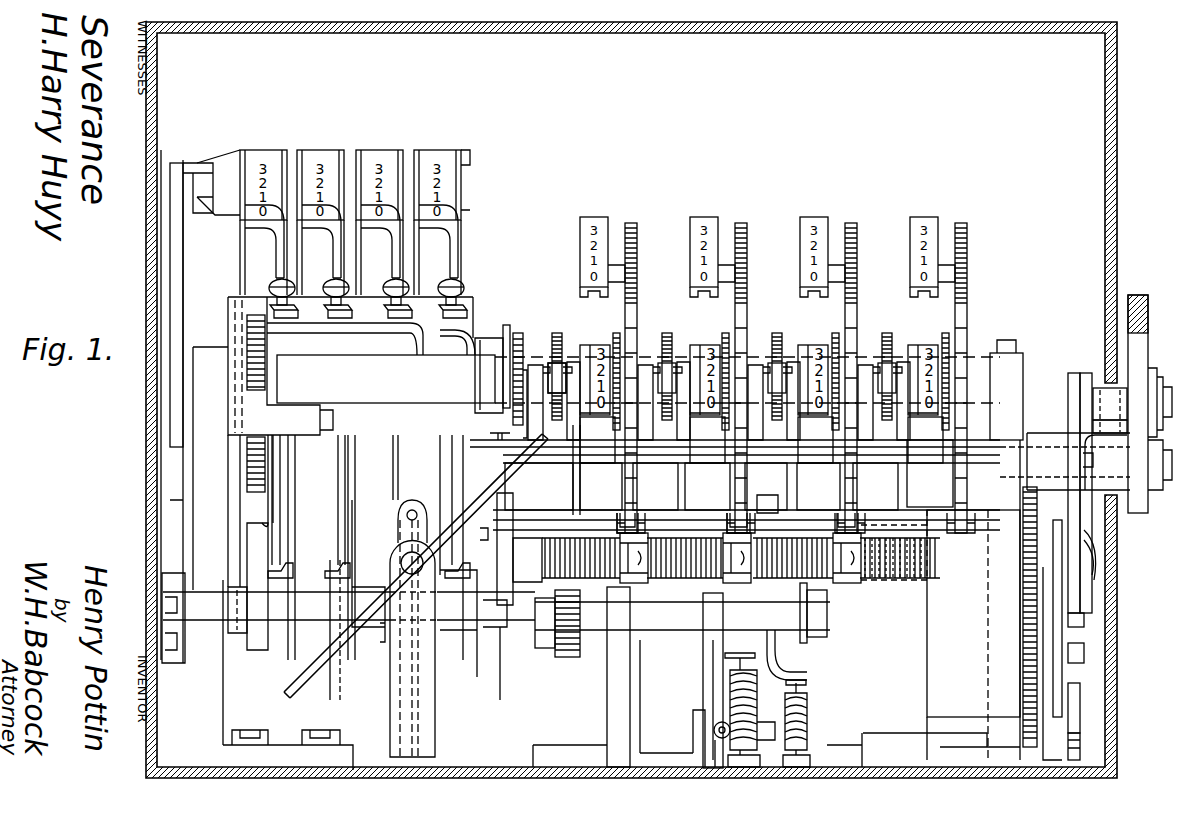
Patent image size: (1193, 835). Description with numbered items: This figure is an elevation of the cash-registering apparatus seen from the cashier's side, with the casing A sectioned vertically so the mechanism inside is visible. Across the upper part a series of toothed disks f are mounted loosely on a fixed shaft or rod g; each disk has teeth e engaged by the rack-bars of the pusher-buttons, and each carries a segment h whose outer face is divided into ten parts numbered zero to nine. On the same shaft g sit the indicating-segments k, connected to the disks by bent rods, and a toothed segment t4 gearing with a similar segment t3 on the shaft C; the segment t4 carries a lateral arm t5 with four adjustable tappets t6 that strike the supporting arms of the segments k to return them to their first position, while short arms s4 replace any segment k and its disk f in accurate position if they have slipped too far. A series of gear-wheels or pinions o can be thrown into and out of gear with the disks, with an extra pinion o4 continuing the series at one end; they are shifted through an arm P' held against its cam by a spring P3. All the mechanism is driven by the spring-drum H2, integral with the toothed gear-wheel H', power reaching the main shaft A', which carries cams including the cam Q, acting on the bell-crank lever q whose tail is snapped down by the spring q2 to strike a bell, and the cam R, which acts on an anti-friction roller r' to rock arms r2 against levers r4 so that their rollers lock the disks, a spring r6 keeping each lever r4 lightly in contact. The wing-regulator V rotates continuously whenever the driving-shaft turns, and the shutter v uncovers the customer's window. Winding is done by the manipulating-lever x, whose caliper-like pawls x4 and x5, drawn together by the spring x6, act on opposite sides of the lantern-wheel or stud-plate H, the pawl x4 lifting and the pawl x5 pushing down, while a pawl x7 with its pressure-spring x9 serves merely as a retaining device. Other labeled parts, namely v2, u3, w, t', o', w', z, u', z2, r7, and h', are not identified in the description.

The casing A is at (648, 400).
The shutter v is at (220, 155).
The side plate v2 is at (183, 468).
The indicating-segments k is at (263, 170).
The tappets t6 is at (293, 290).
The lateral arm t5 is at (395, 275).
The toothed segment t4 is at (250, 338).
The toothed segment t3 is at (255, 465).
The fixed shaft or rod g is at (330, 378).
The sleeve u3 is at (492, 338).
The pinion o4 is at (518, 333).
The segments h is at (767, 236).
The teeth e is at (637, 228).
The numeral wheel w is at (788, 383).
The pinion t' is at (723, 361).
The sleeve o' is at (708, 355).
The gear-wheels o is at (688, 354).
The rack w' is at (780, 366).
The stop z is at (580, 350).
The toothed disks f is at (631, 345).
The sleeve u' is at (668, 329).
The guide block z2 is at (575, 485).
The levers r4 is at (722, 530).
The bracket r7 is at (748, 515).
The spring r6 is at (548, 573).
The anti-friction-roller r' is at (747, 608).
The arms r2 is at (618, 570).
The cam R is at (565, 657).
The main shaft A' is at (682, 632).
The cam Q is at (712, 622).
The bell-crank lever q is at (712, 672).
The spring q2 is at (735, 708).
The arm P' is at (797, 631).
The spring P3 is at (810, 712).
The shaft C is at (349, 600).
The arms s4 is at (318, 565).
The wing-regulator V is at (485, 500).
The spring-drum H2 is at (941, 600).
The toothed gear-wheel H' is at (1013, 617).
The lantern-wheel or stud-plate H is at (1067, 640).
The pawl x5 is at (1073, 373).
The spring x6 is at (1092, 550).
The block h' is at (1103, 638).
The pawl x7 is at (1080, 720).
The pressure-spring x9 is at (1080, 742).
The pawl x4 is at (1075, 462).
The manipulating-lever x is at (1138, 342).